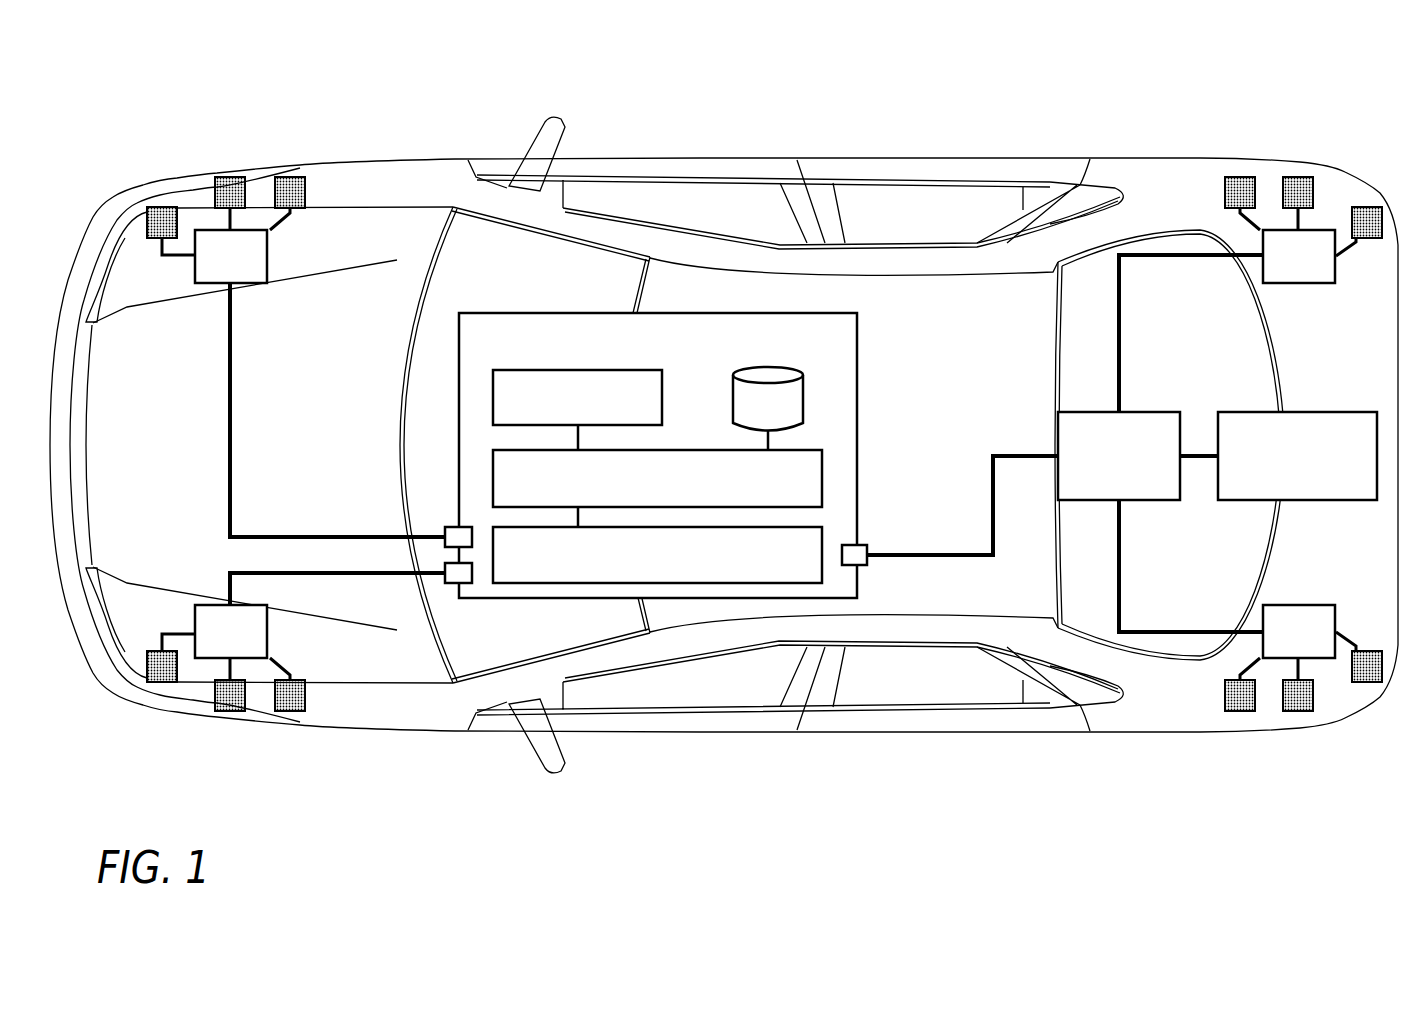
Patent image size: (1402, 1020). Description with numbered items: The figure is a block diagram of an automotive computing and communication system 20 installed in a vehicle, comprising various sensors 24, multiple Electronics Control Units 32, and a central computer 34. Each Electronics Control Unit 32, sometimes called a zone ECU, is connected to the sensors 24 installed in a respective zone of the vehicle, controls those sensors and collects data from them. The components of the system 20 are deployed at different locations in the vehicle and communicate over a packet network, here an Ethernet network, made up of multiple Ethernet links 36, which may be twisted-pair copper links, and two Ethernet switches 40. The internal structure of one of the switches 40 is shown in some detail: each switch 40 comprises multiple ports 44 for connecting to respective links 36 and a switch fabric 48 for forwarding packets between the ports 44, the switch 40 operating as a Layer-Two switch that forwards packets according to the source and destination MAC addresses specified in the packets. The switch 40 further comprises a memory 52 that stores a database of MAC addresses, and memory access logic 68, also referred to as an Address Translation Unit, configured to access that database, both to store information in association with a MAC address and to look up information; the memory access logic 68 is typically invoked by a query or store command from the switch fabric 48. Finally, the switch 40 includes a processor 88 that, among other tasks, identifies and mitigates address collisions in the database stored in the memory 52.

The automotive computing and communication system 20 is at (180, 90).
The sensors 24 is at (160, 207).
The Electronics Control Unit 32 is at (267, 257).
The central computer 34 is at (1345, 410).
The Ethernet links 36 is at (228, 404).
The Ethernet switch 40 is at (493, 313).
The ports 44 is at (447, 527).
The switch fabric 48 is at (518, 585).
The memory 52 is at (803, 400).
The memory access logic 68 is at (822, 478).
The processor 88 is at (493, 392).